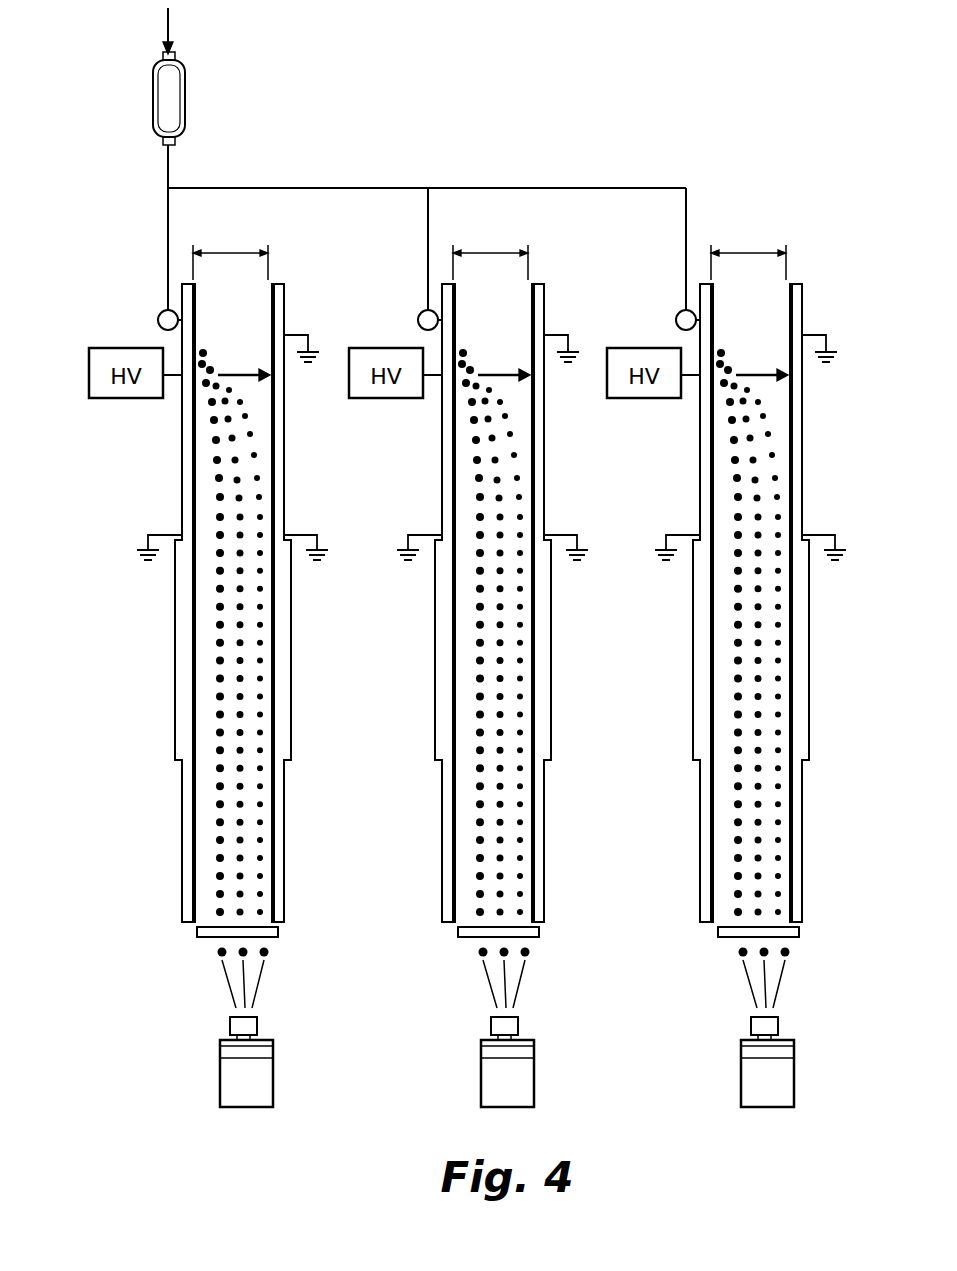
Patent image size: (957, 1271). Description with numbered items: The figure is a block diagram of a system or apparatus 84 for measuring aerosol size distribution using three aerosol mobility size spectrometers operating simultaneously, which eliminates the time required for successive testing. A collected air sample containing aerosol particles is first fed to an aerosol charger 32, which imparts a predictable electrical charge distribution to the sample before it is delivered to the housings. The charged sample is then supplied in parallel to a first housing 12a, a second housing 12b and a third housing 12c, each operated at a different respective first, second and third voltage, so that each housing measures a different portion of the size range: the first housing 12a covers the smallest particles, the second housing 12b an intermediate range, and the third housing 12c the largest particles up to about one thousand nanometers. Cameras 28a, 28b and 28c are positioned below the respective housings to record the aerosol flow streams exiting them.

The system or apparatus 84 is at (603, 102).
The aerosol charger 32 is at (152, 100).
The first housing 12a is at (175, 730).
The second housing 12b is at (437, 727).
The third housing 12c is at (693, 727).
The camera 28a is at (222, 1080).
The camera 28b is at (482, 1070).
The camera 28c is at (742, 1068).